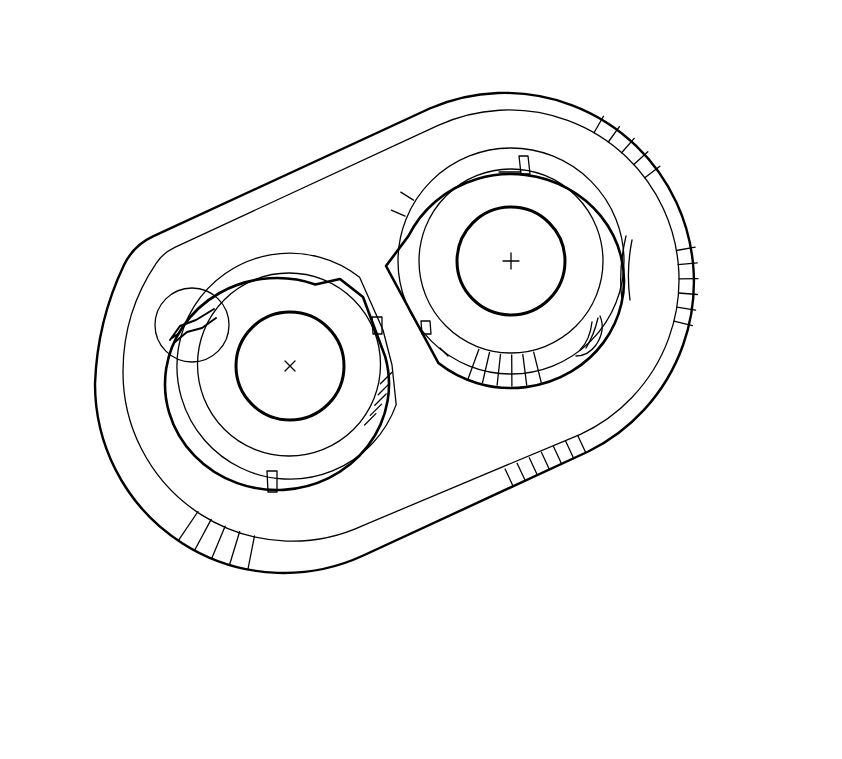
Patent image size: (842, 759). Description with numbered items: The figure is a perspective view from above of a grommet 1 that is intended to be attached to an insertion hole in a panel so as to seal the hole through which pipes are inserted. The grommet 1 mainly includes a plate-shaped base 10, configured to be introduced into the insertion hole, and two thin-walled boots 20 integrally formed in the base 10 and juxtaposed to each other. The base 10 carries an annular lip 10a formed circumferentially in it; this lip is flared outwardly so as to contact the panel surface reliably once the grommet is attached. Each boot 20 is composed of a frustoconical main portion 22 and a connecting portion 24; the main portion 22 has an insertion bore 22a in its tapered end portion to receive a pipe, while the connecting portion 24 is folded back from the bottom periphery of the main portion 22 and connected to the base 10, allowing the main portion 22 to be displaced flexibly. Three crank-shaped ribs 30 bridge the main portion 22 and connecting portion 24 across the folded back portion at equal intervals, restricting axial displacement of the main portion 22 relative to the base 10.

The grommet 1 is at (625, 84).
The base 10 is at (325, 230).
The annular lip 10a is at (382, 140).
The boot 20 is at (437, 622).
The main portion 22 is at (383, 457).
The insertion bore 22a is at (511, 261).
The connecting portion 24 is at (420, 455).
The rib 30 is at (525, 155).